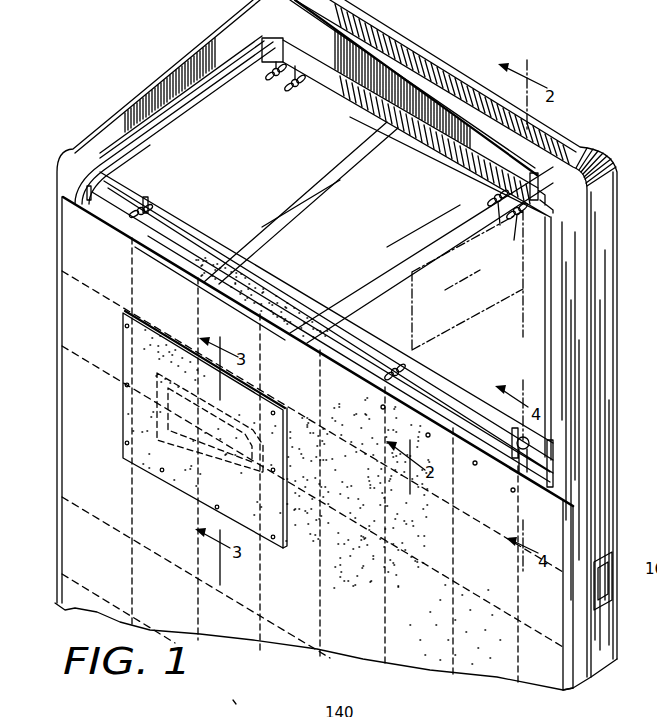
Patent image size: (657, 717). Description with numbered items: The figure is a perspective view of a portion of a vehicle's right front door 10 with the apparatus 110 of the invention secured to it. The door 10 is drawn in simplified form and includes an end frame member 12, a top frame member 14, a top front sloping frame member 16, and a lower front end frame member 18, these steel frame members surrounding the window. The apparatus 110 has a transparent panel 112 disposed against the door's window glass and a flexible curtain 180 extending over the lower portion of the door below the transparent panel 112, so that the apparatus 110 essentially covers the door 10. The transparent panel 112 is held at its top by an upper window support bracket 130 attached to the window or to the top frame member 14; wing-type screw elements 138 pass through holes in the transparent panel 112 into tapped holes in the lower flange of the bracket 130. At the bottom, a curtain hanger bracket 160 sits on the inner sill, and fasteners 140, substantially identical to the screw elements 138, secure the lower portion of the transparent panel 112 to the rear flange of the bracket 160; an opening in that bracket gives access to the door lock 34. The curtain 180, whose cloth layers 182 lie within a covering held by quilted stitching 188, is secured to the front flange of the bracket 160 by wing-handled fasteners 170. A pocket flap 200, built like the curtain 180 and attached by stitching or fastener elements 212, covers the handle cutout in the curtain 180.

The door 10 is at (628, 326).
The end frame member 12 is at (596, 478).
The top frame member 14 is at (582, 145).
The top front sloping frame member 16 is at (205, 40).
The lower front end frame member 18 is at (60, 330).
The door lock 34 is at (522, 464).
The apparatus 110 is at (182, 160).
The transparent panel 112 is at (338, 235).
The upper window support bracket 130 is at (374, 127).
The screw elements 138 is at (503, 230).
The fasteners 140 is at (389, 362).
The curtain hanger bracket 160 is at (350, 400).
The fasteners 170 is at (518, 494).
The flexible curtain 180 is at (459, 636).
The cloth layers 182 is at (232, 716).
The stitching 188 is at (446, 581).
The pocket flap 200 is at (178, 477).
The stitching or fastener elements 212 is at (278, 508).